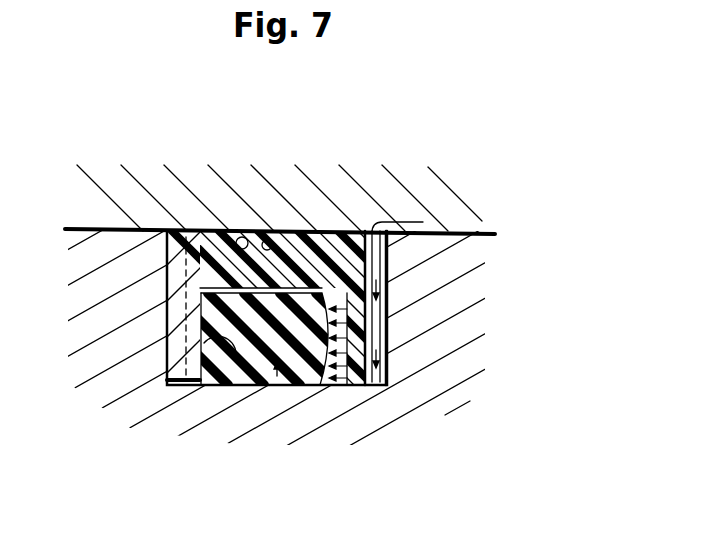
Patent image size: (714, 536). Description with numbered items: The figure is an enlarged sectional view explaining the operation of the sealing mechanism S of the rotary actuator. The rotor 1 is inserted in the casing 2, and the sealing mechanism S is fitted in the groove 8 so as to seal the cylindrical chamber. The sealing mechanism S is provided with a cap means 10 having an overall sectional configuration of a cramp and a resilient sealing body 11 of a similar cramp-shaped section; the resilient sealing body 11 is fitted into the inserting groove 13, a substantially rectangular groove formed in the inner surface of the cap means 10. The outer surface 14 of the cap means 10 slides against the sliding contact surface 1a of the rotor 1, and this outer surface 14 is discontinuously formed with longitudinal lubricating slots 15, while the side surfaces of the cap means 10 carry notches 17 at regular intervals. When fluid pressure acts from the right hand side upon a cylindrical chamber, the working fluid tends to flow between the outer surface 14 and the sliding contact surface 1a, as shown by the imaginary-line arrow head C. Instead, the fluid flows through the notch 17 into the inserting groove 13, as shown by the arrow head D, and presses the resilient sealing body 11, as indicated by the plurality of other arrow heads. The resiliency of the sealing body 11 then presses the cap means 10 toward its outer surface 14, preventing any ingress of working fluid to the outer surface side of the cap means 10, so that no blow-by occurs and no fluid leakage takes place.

The rotor 1 is at (463, 164).
The sliding contact surface 1a is at (214, 230).
The casing 2 is at (428, 446).
The groove 8 is at (207, 385).
The cap means 10 is at (212, 250).
The resilient sealing body 11 is at (275, 385).
The inserting groove 13 is at (232, 385).
The outer surface 14 is at (343, 229).
The lubricating slots 15 is at (213, 236).
The notches 17 is at (180, 309).
The sealing mechanism S is at (333, 191).
The arrow head C is at (340, 217).
The arrow head D is at (403, 204).